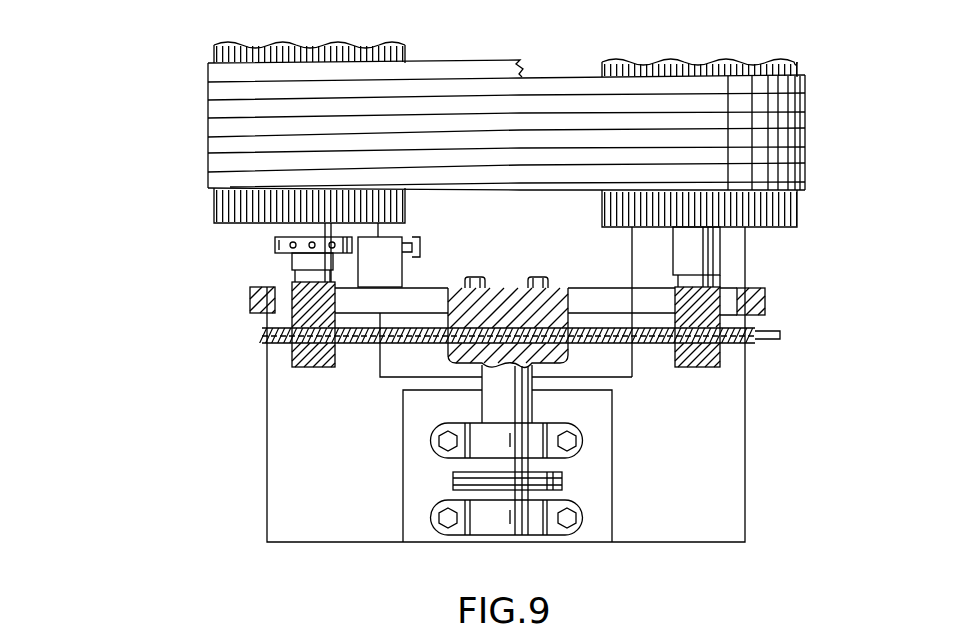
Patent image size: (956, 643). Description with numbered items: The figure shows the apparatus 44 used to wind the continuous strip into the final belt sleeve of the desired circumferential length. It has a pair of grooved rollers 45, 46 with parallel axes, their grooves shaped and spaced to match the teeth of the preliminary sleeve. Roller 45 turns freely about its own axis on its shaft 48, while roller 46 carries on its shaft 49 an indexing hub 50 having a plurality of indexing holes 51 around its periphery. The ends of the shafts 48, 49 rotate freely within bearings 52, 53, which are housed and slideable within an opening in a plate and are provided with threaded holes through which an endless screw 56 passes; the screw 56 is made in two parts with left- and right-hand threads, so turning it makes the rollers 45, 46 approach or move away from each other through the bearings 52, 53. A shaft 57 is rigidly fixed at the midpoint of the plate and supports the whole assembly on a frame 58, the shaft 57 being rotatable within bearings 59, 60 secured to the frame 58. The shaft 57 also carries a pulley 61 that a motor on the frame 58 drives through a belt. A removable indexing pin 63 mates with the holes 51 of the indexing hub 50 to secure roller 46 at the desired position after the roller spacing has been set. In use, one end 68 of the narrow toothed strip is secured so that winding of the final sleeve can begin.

The apparatus 44 is at (185, 252).
The roller 45 is at (795, 208).
The roller 46 is at (217, 206).
The shaft 48 is at (720, 252).
The shaft 49 is at (297, 228).
The indexing hub 50 is at (280, 257).
The indexing holes 51 is at (277, 245).
The bearing 52 is at (715, 355).
The bearing 53 is at (297, 352).
The endless screw 56 is at (663, 343).
The shaft 57 is at (493, 400).
The frame 58 is at (598, 542).
The bearing 59 is at (457, 452).
The bearing 60 is at (567, 543).
The pulley 61 is at (552, 493).
The indexing pin 63 is at (410, 240).
The end of the narrow toothed strip 68 is at (521, 196).